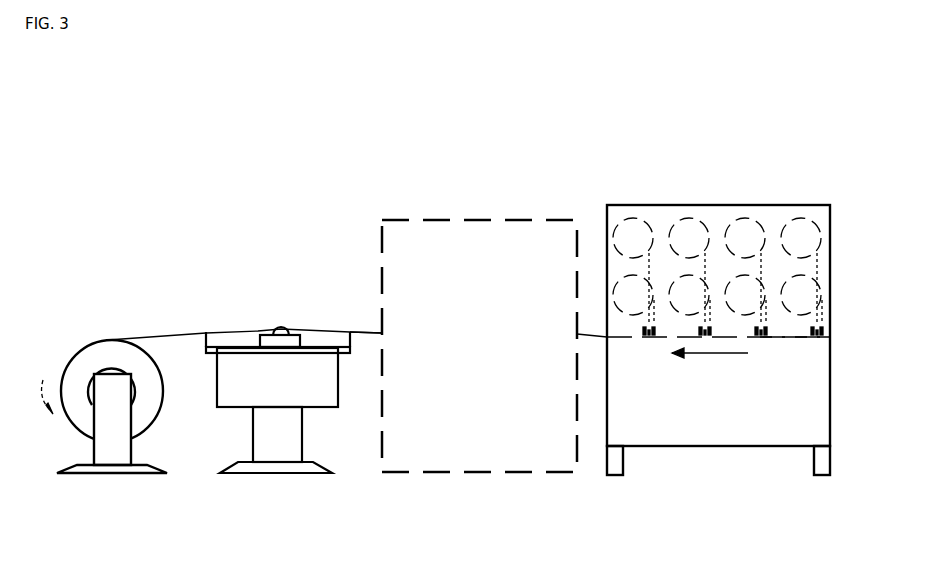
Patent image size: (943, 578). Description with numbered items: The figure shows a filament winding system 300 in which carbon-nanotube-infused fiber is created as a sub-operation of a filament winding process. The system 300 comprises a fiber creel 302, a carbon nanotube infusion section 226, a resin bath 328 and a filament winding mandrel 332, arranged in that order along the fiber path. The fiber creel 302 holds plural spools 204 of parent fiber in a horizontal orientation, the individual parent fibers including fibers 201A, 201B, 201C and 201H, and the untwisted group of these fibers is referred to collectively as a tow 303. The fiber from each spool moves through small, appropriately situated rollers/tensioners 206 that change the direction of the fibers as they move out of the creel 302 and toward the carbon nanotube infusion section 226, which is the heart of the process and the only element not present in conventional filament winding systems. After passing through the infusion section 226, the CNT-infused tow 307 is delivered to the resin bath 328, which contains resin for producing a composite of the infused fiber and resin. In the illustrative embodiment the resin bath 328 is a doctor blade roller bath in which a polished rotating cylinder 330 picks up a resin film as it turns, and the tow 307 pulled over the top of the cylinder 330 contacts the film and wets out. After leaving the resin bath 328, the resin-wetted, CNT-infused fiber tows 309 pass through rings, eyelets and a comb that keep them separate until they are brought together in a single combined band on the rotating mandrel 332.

The filament winding system 300 is at (109, 117).
The filament winding mandrel 332 is at (90, 352).
The resin-wetted, CNT-infused fiber tows 309 is at (150, 336).
The resin bath 328 is at (268, 328).
The cylinder 330 is at (280, 330).
The CNT-infused tow 307 is at (365, 325).
The carbon nanotube infusion section 226 is at (487, 331).
The tow 303 is at (592, 333).
The fiber creel 302 is at (703, 195).
The spools 204 is at (633, 237).
The parent fiber 201H is at (643, 320).
The parent fiber 201C is at (757, 257).
The rollers/tensioners 206 is at (812, 322).
The parent fiber 201A is at (817, 258).
The parent fiber 201B is at (793, 333).